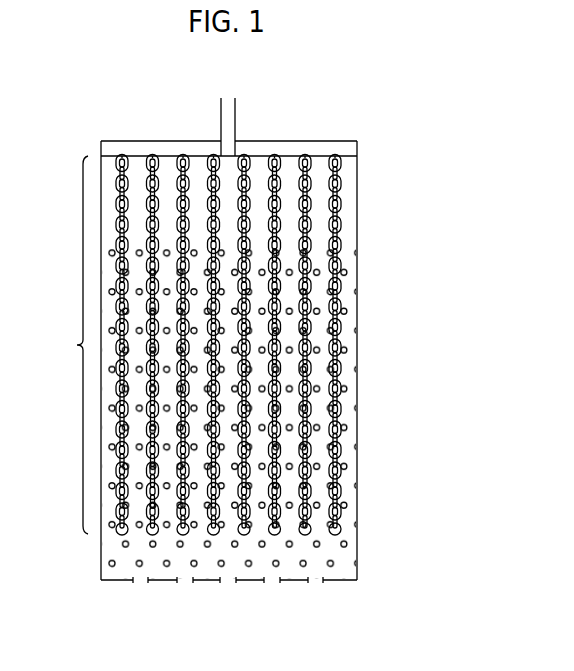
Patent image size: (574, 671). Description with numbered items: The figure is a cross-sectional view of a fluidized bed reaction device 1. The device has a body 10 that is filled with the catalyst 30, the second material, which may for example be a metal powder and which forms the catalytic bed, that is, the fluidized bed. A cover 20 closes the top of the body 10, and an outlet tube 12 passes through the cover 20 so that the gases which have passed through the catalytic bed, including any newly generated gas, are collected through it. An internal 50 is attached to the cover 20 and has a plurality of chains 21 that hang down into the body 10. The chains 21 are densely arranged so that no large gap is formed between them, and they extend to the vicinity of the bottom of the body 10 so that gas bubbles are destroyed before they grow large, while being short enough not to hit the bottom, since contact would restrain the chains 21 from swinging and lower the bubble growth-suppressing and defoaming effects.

The fluidized bed reaction device 1 is at (415, 132).
The body 10 is at (358, 213).
The outlet tube 12 is at (236, 108).
The cover 20 is at (338, 141).
The chains 21 is at (317, 390).
The catalyst 30 is at (350, 447).
The internal 50 is at (67, 345).